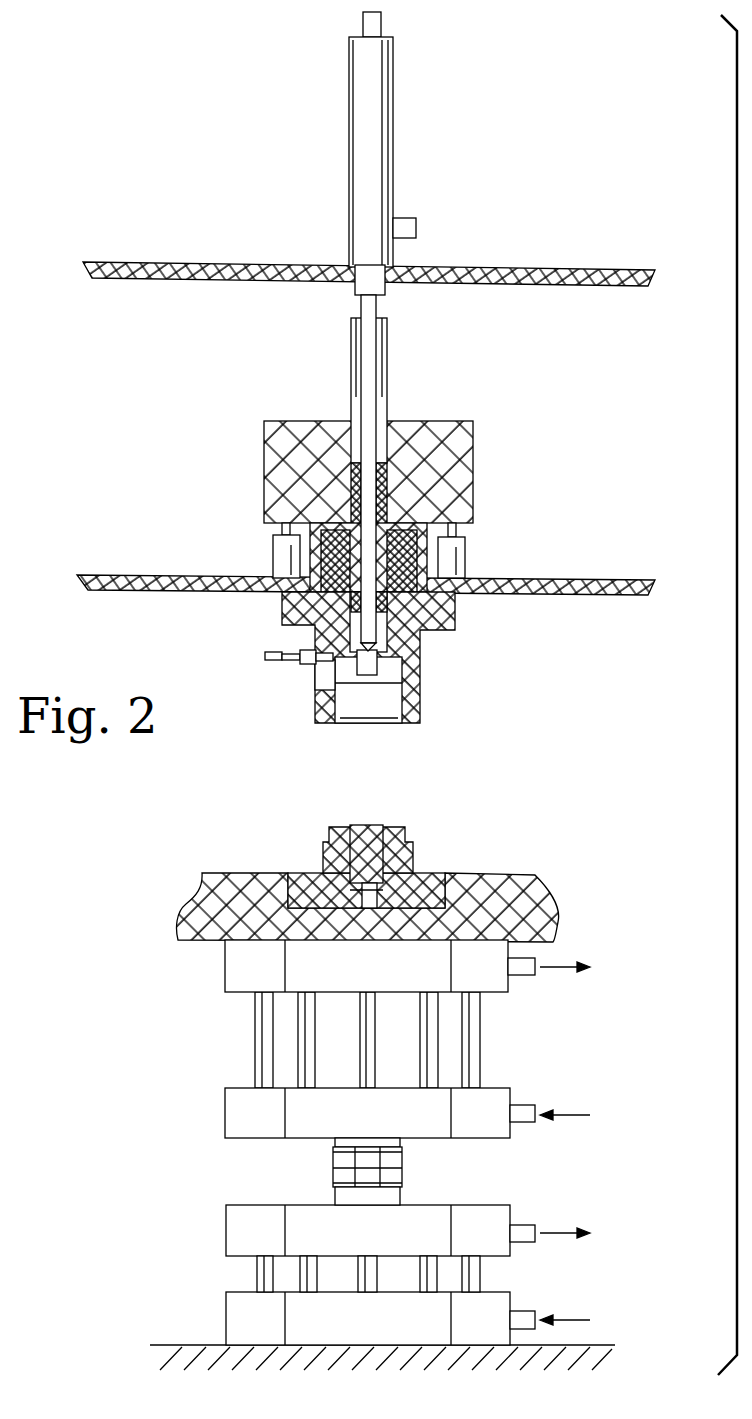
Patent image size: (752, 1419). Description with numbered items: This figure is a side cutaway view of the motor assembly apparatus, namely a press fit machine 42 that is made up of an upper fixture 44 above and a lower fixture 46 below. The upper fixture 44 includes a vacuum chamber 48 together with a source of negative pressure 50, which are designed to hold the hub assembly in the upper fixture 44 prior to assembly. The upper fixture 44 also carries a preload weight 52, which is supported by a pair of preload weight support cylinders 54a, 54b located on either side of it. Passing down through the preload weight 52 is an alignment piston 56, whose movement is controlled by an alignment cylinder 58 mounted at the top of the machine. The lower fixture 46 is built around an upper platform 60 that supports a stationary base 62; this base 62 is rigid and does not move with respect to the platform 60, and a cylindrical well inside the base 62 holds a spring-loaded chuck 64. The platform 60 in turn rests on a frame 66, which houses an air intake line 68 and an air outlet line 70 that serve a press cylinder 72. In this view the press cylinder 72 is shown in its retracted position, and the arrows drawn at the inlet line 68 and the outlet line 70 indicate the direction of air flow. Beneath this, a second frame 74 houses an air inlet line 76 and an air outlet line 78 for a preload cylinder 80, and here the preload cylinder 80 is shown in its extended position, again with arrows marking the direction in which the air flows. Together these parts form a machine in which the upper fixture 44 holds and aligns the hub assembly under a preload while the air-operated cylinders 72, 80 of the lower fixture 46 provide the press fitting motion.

The press fit machine 42 is at (202, 780).
The upper fixture 44 is at (322, 358).
The lower fixture 46 is at (613, 919).
The vacuum chamber 48 is at (388, 728).
The source of negative pressure 50 is at (295, 665).
The preload weight 52 is at (473, 495).
The preload weight support cylinder 54a is at (465, 563).
The preload weight support cylinder 54b is at (273, 560).
The alignment piston 56 is at (382, 415).
The alignment cylinder 58 is at (393, 182).
The upper platform 60 is at (557, 918).
The stationary base 62 is at (430, 872).
The spring-loaded chuck 64 is at (362, 823).
The frame 66 is at (323, 852).
The air intake line 68 is at (523, 977).
The air outlet line 70 is at (523, 1105).
The press cylinder 72 is at (402, 1138).
The second frame 74 is at (257, 1282).
The air inlet line 76 is at (523, 1311).
The air outlet line 78 is at (523, 1225).
The preload cylinder 80 is at (333, 1197).